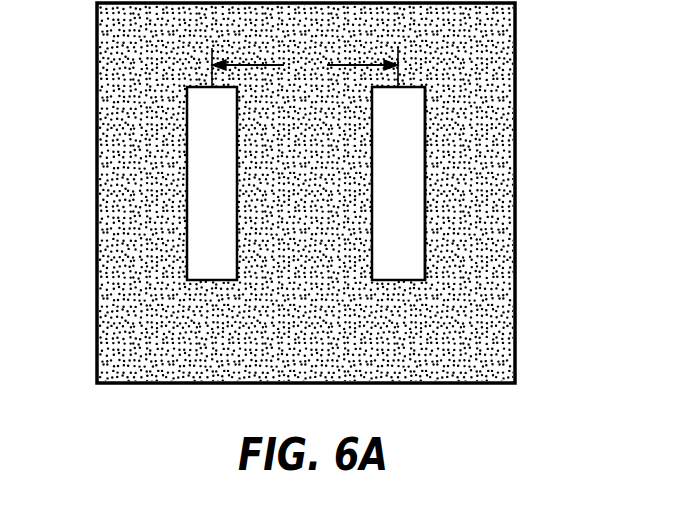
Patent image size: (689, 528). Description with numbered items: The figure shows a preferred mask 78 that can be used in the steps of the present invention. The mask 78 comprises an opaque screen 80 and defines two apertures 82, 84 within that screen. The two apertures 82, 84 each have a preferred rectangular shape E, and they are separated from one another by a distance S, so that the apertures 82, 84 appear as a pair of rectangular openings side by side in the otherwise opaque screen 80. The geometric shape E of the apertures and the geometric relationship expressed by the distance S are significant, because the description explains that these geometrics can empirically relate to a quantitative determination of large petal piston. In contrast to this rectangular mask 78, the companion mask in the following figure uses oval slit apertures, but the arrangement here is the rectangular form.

The mask 78 is at (515, 268).
The opaque screen 80 is at (156, 58).
The aperture 82 is at (400, 191).
The aperture 84 is at (213, 177).
The rectangular shape E is at (427, 118).
The distance S is at (305, 67).